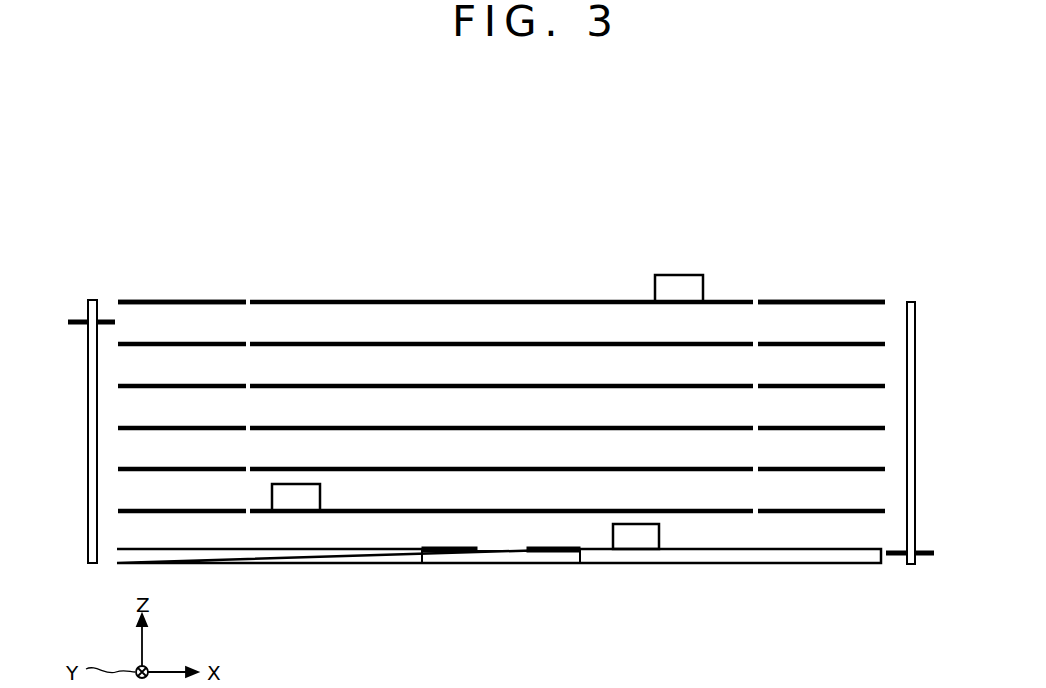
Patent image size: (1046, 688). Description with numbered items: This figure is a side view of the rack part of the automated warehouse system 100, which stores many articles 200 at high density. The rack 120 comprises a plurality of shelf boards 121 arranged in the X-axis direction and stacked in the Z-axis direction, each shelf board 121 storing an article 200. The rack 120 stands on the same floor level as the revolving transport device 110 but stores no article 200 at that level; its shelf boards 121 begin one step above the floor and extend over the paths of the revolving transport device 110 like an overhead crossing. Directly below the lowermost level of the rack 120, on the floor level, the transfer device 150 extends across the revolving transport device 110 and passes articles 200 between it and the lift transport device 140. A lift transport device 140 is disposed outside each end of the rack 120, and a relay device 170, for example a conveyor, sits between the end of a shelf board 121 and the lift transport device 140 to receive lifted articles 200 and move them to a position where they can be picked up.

The automated warehouse system 100 is at (815, 128).
The revolving transport device 110 is at (502, 564).
The rack 120 is at (289, 301).
The shelf board 121 is at (365, 512).
The lift transport device 140 is at (94, 299).
The transfer device 150 is at (265, 564).
The relay device 170 is at (177, 301).
The article 200 is at (685, 274).